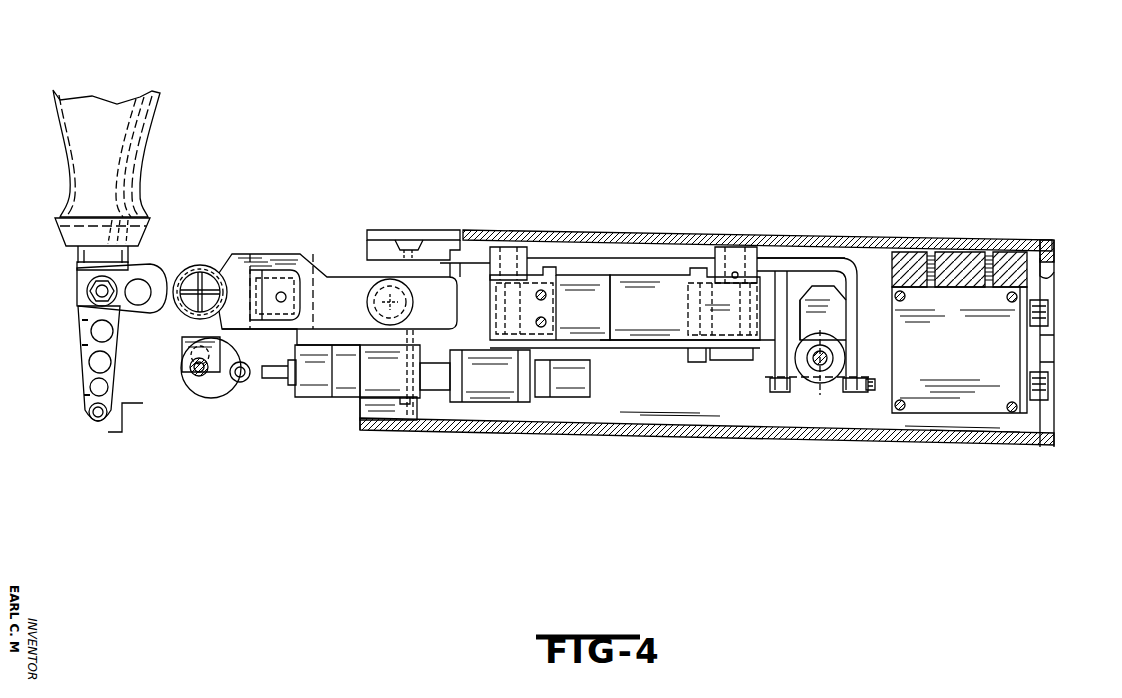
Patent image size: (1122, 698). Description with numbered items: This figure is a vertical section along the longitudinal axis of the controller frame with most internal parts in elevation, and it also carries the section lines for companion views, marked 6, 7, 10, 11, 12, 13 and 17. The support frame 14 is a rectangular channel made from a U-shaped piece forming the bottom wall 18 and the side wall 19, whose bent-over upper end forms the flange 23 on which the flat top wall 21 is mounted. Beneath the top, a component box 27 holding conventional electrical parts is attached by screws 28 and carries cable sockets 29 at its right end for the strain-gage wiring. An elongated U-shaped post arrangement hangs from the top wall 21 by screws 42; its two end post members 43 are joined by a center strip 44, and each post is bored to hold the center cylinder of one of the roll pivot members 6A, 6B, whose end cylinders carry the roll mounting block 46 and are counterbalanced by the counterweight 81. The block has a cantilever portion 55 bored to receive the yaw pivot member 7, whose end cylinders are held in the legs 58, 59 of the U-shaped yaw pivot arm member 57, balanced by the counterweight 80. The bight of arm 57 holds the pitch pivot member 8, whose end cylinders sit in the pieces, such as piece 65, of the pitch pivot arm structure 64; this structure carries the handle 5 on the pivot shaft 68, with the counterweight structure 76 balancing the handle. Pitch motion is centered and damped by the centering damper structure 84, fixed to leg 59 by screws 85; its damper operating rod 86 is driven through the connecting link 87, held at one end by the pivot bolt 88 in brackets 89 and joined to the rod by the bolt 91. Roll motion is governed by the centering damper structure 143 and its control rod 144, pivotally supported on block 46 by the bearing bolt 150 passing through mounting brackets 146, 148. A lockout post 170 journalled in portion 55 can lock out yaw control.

The handle 5 is at (160, 110).
The roll pivot member 6 is at (85, 22).
The yaw pivot member 7 is at (178, 188).
The pitch pivot member 8 is at (216, 273).
The section line 10 is at (275, 185).
The section line 11 is at (703, 198).
The section line 12 is at (896, 203).
The pin / section line 13 is at (240, 380).
The support frame 14 is at (1050, 242).
The section line 17 is at (312, 320).
The bottom wall 18 is at (1018, 442).
The side wall 19 is at (1054, 352).
The top wall 21 is at (796, 240).
The flange 23 is at (1054, 271).
The component box 27 is at (970, 355).
The screw 28 is at (997, 252).
The cable socket 29 is at (1050, 314).
The screw 42 is at (500, 247).
The end post member 43 is at (713, 258).
The center strip 44 is at (610, 255).
The roll mounting block 46 is at (667, 347).
The cantilever portion 55 is at (340, 282).
The yaw pivot arm member 57 is at (250, 254).
The leg 58 is at (299, 260).
The leg 59 is at (295, 340).
The pitch pivot arm structure 64 is at (150, 268).
The pivot arm piece 65 is at (193, 266).
The pivot shaft 68 is at (93, 292).
The counterweight structure 76 is at (80, 358).
The counterweight 80 is at (436, 242).
The counterweight 81 is at (612, 302).
The centering damper structure 84 is at (326, 398).
The screw 85 is at (412, 418).
The damper operating rod 86 is at (275, 380).
The connecting link 87 is at (210, 400).
The pivot bolt 88 is at (195, 370).
The bracket 89 is at (188, 352).
The bolt 91 is at (188, 343).
The centering damper structure 143 is at (840, 320).
The control rod 144 is at (822, 368).
The mounting bracket 146 is at (773, 365).
The mounting bracket 148 is at (858, 270).
The bearing bolt 150 is at (870, 388).
The lockout post 170 is at (412, 310).
The pivot member 6A is at (695, 336).
The pivot member 6B is at (550, 322).